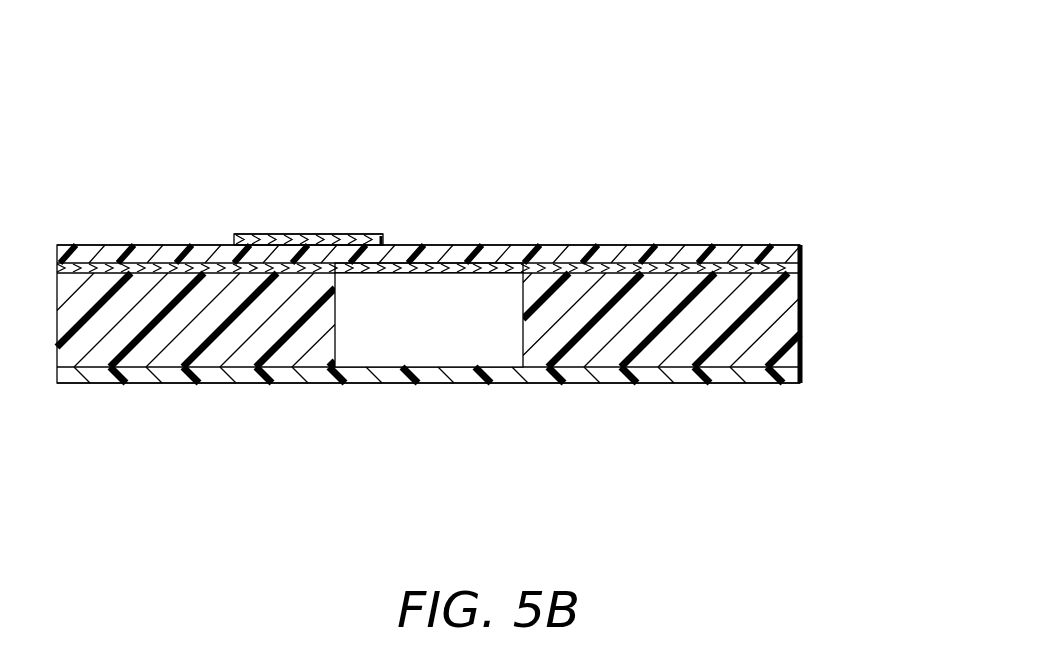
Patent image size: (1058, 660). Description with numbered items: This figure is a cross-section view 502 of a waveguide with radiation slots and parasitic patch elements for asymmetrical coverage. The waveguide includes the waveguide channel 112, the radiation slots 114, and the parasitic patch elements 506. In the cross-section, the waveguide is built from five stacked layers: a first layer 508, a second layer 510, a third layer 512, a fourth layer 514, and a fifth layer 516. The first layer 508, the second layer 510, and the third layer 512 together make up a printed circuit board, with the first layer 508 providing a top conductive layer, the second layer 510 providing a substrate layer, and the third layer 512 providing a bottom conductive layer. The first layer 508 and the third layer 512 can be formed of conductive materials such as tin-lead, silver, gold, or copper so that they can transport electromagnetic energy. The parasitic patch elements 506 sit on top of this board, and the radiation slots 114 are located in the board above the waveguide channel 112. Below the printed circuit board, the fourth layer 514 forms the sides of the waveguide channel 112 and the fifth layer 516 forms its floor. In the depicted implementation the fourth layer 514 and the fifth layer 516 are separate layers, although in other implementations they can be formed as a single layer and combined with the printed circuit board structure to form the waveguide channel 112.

The cross-section view 502 is at (132, 72).
The parasitic patch elements 506 is at (265, 238).
The first layer 508 is at (366, 236).
The second layer 510 is at (742, 255).
The third layer 512 is at (755, 268).
The fourth layer 514 is at (758, 328).
The fifth layer 516 is at (750, 378).
The radiation slots 114 is at (427, 270).
The waveguide channel 112 is at (393, 328).